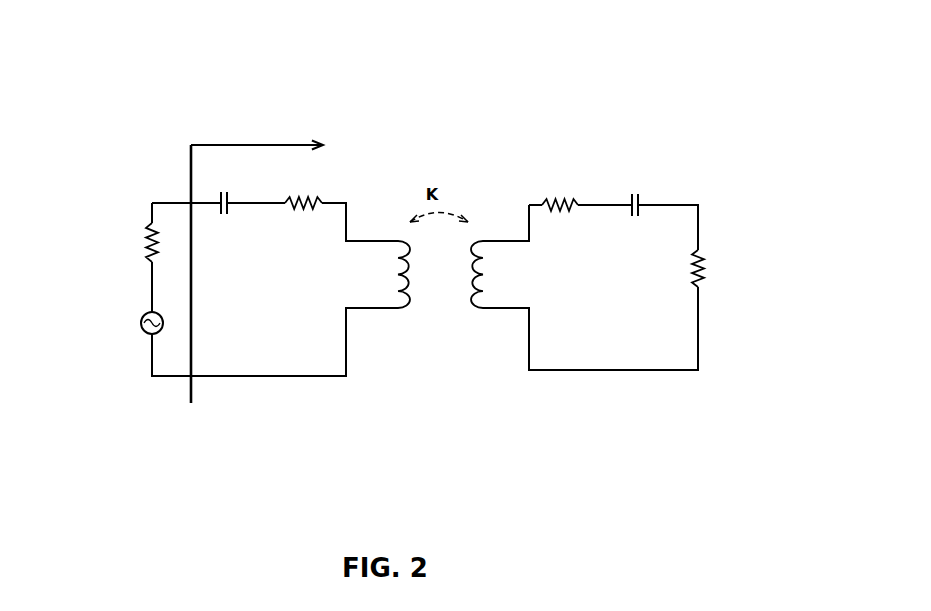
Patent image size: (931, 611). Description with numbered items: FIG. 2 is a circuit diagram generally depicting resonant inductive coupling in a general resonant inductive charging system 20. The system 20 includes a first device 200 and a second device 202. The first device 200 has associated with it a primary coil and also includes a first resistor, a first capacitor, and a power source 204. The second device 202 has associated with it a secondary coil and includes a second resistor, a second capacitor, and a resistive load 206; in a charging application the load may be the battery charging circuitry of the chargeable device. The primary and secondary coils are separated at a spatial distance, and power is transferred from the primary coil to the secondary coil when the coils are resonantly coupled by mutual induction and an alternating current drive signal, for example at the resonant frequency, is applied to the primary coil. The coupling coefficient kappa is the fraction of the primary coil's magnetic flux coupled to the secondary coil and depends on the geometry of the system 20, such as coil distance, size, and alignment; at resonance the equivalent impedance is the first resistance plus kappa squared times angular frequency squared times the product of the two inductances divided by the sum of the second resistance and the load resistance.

The system 20 is at (184, 96).
The first device 200 is at (217, 348).
The second device 202 is at (638, 334).
The power source 204 is at (133, 338).
The resistive load 206 is at (722, 257).